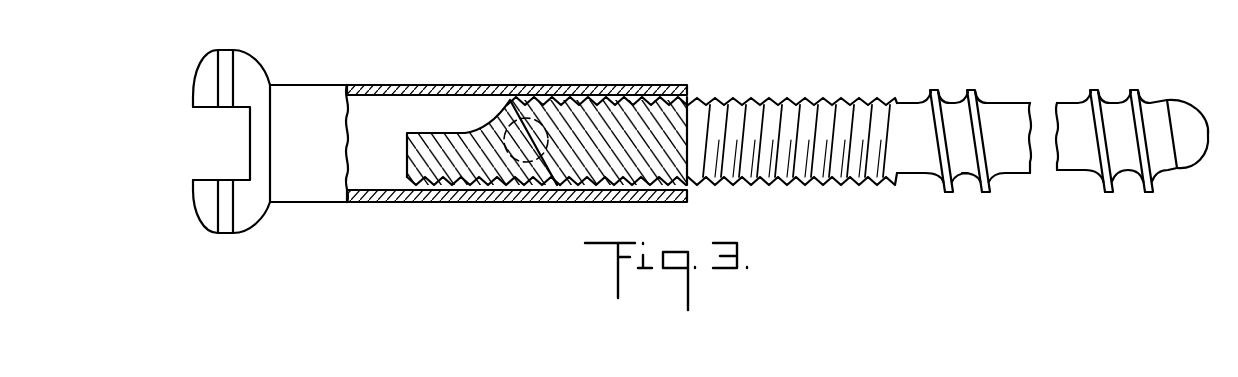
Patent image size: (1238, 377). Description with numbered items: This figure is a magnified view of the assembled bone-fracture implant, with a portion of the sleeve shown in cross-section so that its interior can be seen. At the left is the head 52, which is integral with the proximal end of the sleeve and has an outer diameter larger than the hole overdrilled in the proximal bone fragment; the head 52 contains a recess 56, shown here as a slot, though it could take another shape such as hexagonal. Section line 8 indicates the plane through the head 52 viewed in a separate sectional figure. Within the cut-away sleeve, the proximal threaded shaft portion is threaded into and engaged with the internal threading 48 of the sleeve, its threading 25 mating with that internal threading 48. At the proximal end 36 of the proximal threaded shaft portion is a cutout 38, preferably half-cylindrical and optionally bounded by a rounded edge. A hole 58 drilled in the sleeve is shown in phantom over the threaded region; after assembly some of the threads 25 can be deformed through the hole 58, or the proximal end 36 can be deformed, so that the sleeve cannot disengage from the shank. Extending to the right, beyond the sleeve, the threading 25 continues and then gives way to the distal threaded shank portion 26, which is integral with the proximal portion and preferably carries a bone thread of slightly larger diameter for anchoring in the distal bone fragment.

The section line 8- 8 is at (177, 40).
The threading 25 is at (813, 99).
The distal threaded shank portion 26 is at (1102, 183).
The proximal end 36 is at (405, 160).
The cutout 38 is at (421, 119).
The internal threading 48 is at (623, 103).
The head 52 is at (248, 62).
The recess 56 is at (211, 156).
The hole 58 is at (518, 183).